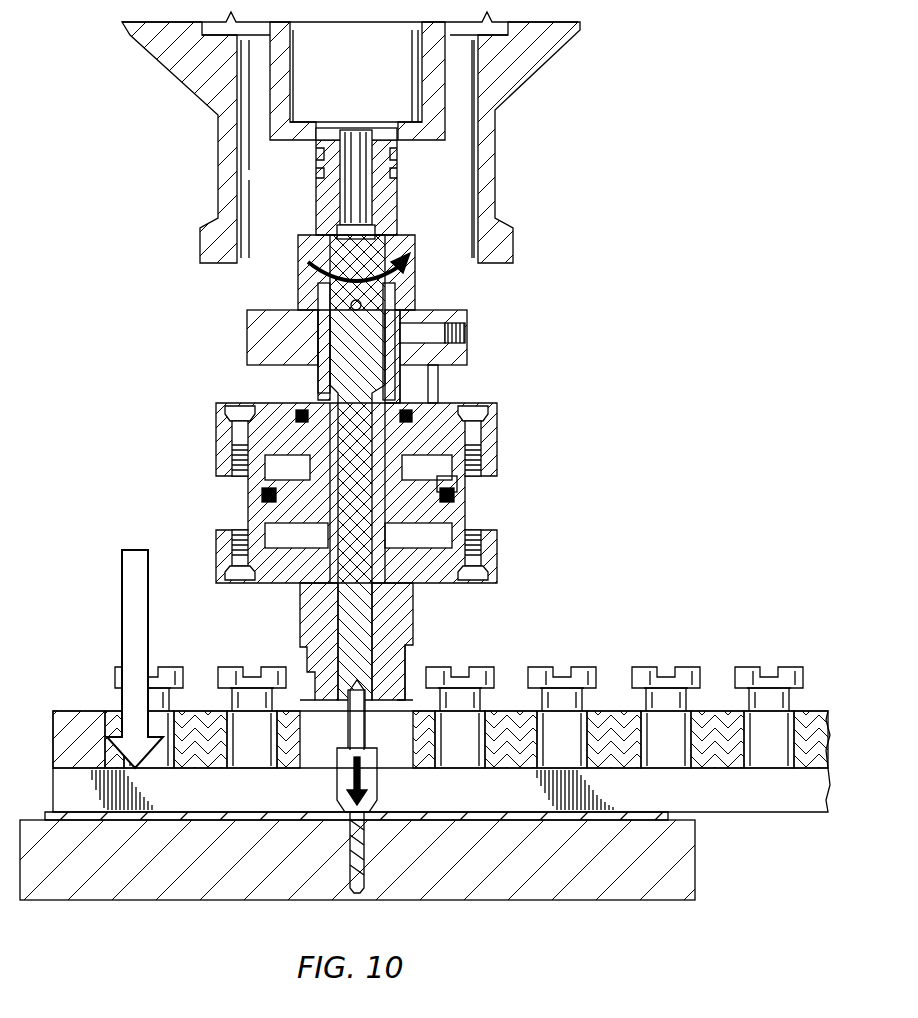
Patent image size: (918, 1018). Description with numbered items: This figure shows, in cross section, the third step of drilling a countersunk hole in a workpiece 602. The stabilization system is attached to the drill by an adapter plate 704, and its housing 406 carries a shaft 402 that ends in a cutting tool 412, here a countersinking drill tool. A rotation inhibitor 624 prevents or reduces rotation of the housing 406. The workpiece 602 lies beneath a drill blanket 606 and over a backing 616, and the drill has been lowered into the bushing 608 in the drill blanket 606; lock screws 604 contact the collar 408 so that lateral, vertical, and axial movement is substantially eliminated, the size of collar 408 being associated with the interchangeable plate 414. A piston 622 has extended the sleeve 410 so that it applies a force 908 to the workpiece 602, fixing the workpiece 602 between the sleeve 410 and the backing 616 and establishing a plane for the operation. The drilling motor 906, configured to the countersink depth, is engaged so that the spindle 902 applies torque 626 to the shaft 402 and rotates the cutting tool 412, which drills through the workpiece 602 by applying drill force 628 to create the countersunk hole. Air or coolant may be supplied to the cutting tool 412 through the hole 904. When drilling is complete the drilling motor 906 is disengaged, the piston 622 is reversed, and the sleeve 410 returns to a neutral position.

The shaft 402 is at (330, 200).
The housing 406 is at (216, 425).
The collar 408 is at (412, 644).
The sleeve 410 is at (333, 596).
The cutting tool 412 is at (367, 863).
The interchangeable plate 414 is at (416, 600).
The workpiece 602 is at (252, 810).
The lock screws 604 is at (230, 667).
The drill blanket 606 is at (70, 711).
The bushing 608 is at (323, 710).
The backing 616 is at (115, 900).
The piston 622 is at (437, 484).
The rotation inhibitor 624 is at (438, 390).
The torque 626 is at (348, 283).
The drill force 628 is at (378, 780).
The adapter plate 704 is at (247, 336).
The spindle 902 is at (360, 203).
The hole 904 is at (436, 332).
The drilling motor 906 is at (300, 142).
The force 908 is at (121, 578).